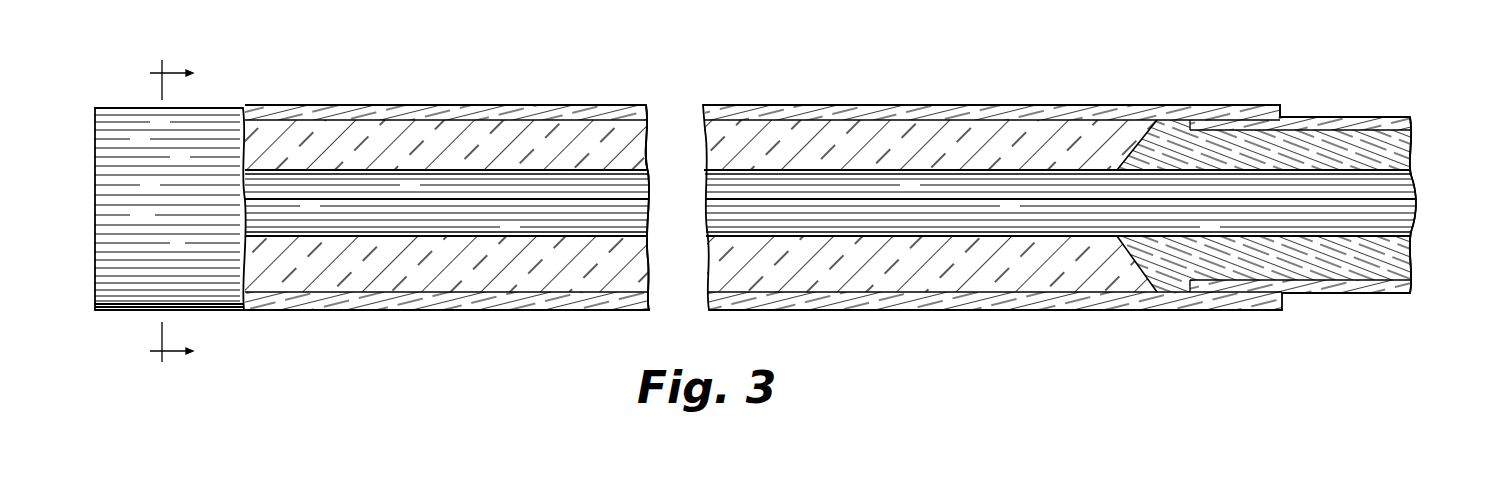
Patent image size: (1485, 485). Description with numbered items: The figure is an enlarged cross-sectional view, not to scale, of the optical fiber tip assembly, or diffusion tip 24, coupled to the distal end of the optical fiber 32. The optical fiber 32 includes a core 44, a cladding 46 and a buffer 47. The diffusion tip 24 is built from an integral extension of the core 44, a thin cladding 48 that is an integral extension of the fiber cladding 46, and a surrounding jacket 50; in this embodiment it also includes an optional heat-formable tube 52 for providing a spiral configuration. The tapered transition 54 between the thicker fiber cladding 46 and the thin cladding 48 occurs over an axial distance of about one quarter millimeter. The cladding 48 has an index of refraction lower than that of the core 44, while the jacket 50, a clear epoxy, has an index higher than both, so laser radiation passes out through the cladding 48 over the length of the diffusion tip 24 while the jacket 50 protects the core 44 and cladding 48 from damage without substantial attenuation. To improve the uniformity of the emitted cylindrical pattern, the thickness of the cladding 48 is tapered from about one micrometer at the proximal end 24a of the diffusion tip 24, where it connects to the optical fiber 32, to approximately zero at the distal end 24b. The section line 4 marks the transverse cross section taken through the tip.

The diffusion tip 24 is at (553, 75).
The proximal end 24a is at (1279, 105).
The distal end 24b is at (95, 130).
The optical fiber 32 is at (1361, 106).
The core 44 is at (650, 201).
The cladding 46 is at (1273, 264).
The buffer 47 is at (1308, 290).
The thin cladding 48 is at (704, 173).
The jacket 50 is at (657, 170).
The heat-formable tube 52 is at (345, 105).
The tapered transition 54 is at (1157, 122).
The section line 4- 4 is at (162, 211).